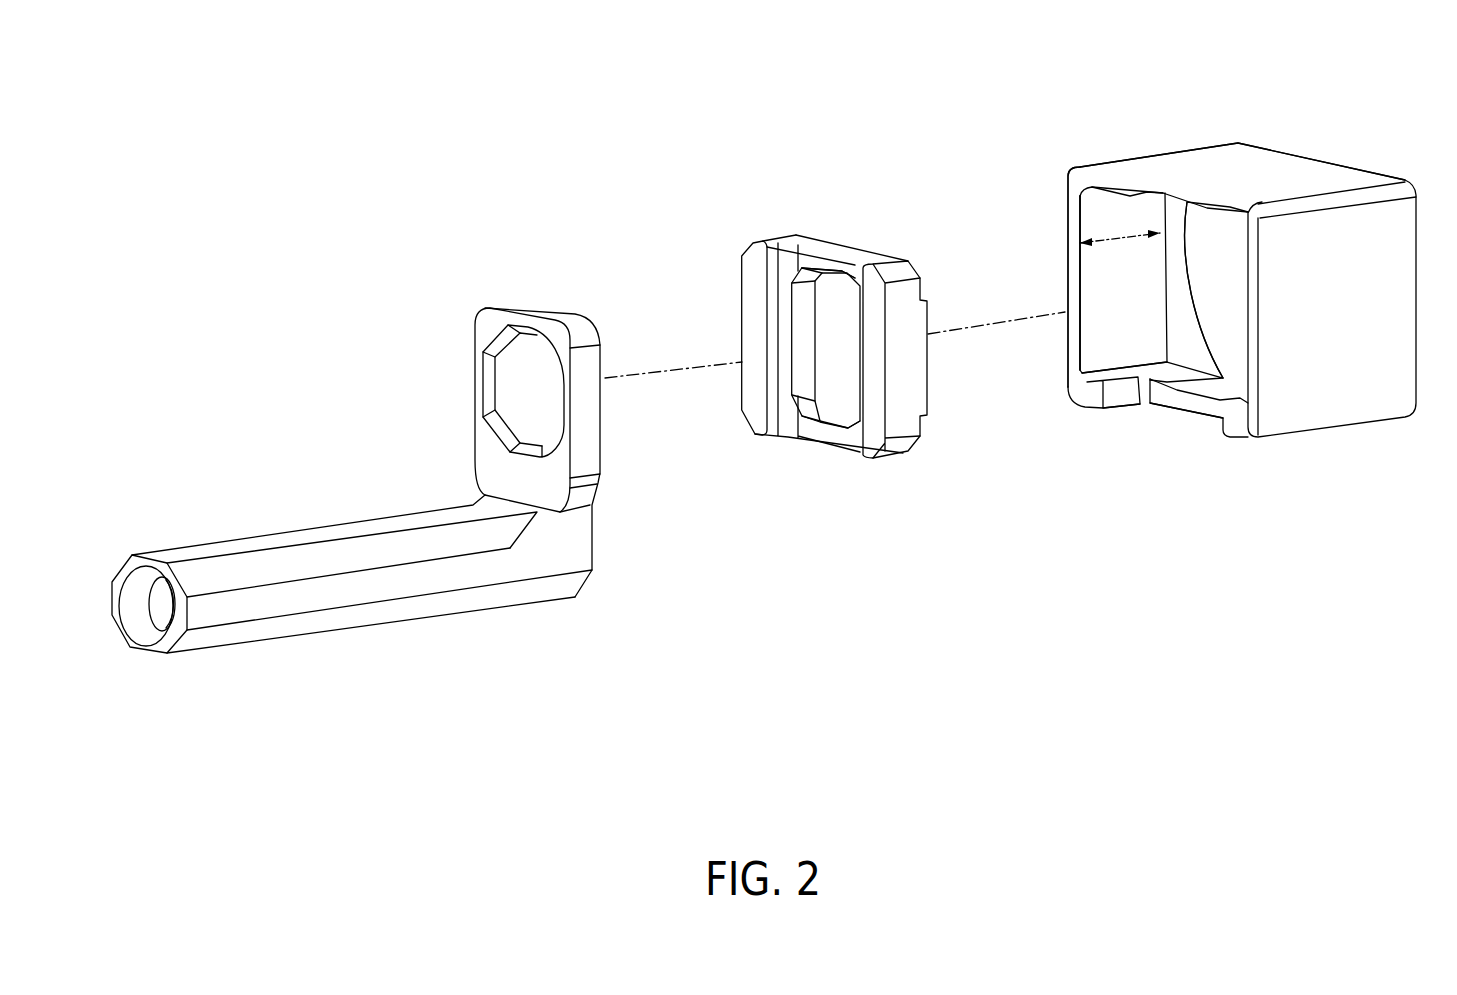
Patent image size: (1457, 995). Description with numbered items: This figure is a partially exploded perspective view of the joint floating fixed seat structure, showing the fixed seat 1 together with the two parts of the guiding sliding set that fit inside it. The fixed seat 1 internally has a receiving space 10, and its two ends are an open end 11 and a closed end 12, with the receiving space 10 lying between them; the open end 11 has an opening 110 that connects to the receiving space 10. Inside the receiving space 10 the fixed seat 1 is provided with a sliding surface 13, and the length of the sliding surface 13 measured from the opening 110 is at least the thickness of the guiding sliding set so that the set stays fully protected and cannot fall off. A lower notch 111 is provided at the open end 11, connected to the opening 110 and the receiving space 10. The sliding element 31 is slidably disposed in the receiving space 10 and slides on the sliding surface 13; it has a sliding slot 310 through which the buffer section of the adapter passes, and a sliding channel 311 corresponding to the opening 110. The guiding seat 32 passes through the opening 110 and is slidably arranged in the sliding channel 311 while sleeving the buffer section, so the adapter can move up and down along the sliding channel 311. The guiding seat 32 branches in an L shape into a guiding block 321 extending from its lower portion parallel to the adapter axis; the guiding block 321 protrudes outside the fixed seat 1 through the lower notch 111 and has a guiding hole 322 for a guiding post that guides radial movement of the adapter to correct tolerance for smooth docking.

The fixed seat 1 is at (1222, 327).
The receiving space 10 is at (1125, 319).
The open end 11 is at (1073, 183).
The closed end 12 is at (1373, 174).
The sliding surface 13 is at (1175, 215).
The opening 110 is at (1233, 297).
The lower notch 111 is at (1185, 423).
The sliding element 31 is at (787, 342).
The sliding slot 310 is at (847, 363).
The sliding channel 311 is at (830, 258).
The guiding seat 32 is at (335, 445).
The guiding block 321 is at (391, 598).
The guiding hole 322 is at (145, 612).